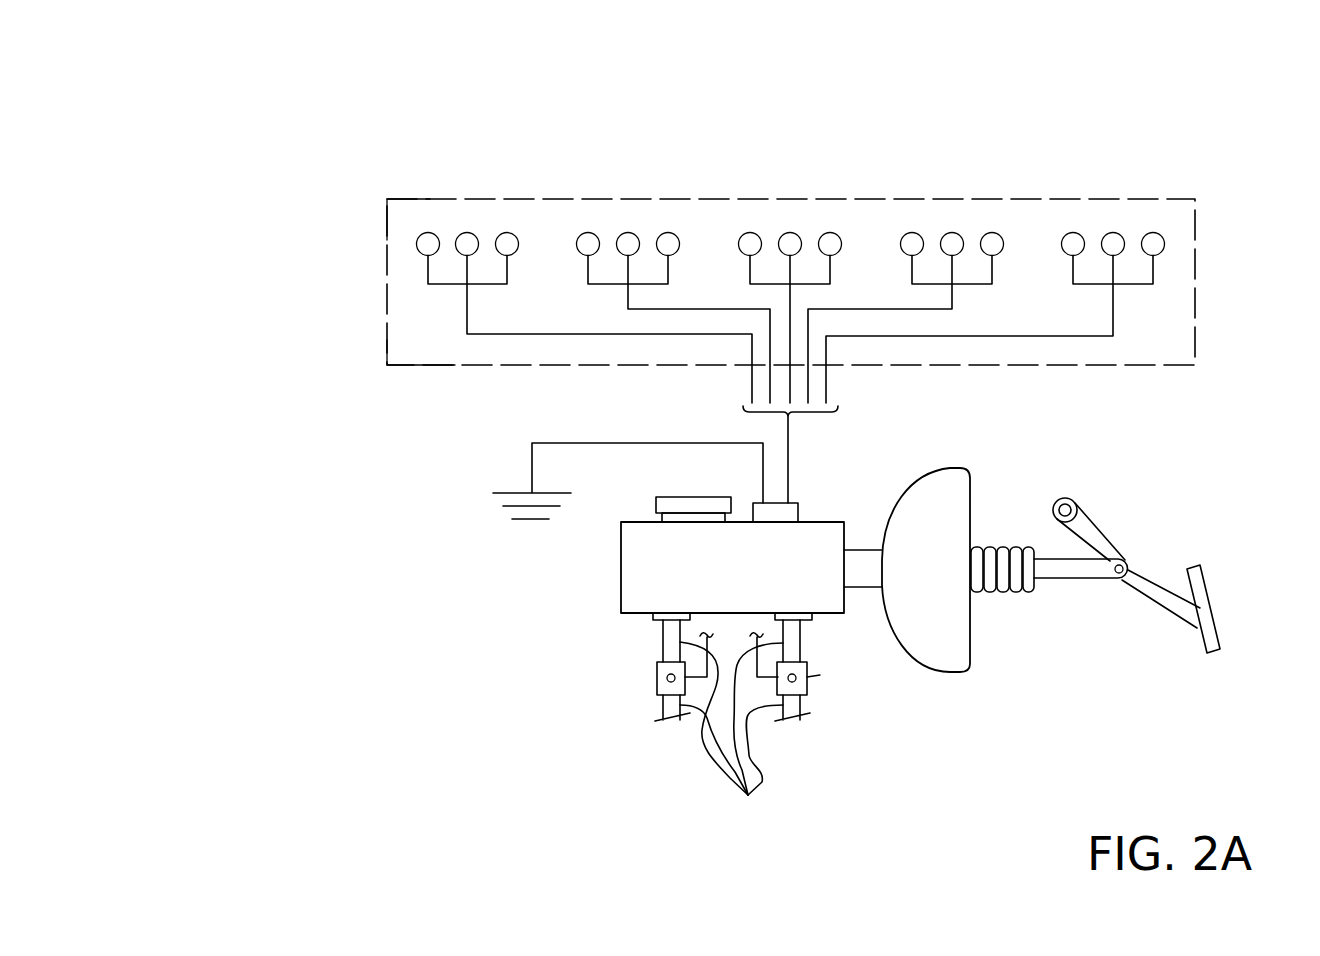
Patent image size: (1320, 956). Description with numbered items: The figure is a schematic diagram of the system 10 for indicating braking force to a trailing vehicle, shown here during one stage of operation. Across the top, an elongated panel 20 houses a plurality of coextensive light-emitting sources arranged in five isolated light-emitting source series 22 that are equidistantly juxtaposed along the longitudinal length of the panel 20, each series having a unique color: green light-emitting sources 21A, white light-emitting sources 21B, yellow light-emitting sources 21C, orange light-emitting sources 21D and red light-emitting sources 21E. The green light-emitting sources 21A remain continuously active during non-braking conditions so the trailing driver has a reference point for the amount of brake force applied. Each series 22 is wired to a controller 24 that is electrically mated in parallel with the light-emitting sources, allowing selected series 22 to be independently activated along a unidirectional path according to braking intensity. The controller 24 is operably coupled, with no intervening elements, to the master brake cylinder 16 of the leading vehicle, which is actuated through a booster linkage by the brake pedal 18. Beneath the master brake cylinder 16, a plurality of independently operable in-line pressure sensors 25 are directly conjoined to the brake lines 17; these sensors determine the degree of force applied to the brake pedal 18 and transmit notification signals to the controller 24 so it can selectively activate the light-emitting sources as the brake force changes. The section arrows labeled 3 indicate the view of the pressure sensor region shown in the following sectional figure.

The system 10 is at (300, 128).
The elongated panel 20 is at (1195, 215).
The green light-emitting sources 21A is at (507, 232).
The white light-emitting sources 21B is at (668, 232).
The yellow light-emitting sources 21C is at (830, 232).
The orange light-emitting sources 21D is at (992, 232).
The red light-emitting sources 21E is at (1153, 232).
The light-emitting source series 22 is at (467, 285).
The controller 24 is at (799, 500).
The master brake cylinder 16 is at (621, 568).
The brake lines 17 is at (731, 739).
The brake pedal 18 is at (1213, 612).
The in-line pressure sensors 25 is at (657, 679).
The section line for FIG. 3 is at (672, 657).